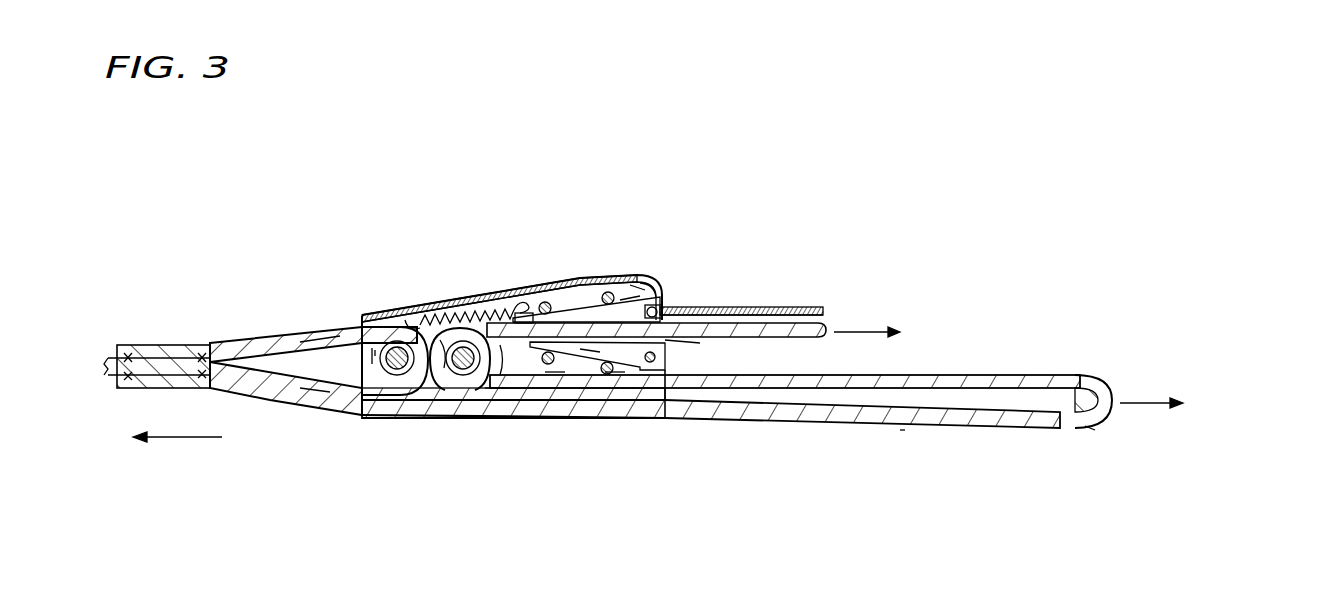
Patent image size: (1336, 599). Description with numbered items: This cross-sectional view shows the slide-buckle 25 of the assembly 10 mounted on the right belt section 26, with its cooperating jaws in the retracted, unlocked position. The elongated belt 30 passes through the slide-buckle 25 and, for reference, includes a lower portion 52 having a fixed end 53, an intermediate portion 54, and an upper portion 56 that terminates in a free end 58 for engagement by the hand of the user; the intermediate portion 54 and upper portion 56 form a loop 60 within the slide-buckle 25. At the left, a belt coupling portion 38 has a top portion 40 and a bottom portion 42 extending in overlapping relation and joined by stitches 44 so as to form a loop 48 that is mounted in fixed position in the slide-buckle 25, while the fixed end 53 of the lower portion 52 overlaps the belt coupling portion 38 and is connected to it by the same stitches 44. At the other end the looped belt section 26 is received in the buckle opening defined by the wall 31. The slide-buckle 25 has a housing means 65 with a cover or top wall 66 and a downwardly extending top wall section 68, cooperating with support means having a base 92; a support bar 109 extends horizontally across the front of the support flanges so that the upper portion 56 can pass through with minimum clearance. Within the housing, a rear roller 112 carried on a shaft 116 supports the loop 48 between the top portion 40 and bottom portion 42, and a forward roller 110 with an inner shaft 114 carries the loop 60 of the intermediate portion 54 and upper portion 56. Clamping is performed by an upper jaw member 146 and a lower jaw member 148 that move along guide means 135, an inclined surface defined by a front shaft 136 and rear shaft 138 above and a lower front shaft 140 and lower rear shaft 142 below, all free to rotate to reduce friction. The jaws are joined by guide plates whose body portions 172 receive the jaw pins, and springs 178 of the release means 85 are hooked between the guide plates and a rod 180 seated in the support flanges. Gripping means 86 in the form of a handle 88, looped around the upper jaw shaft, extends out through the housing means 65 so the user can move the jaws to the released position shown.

The assembly 10 is at (730, 421).
The slide-buckle 25 is at (507, 292).
The right belt section 26 is at (884, 425).
The elongated belt 30 is at (568, 422).
The wall 31 is at (1092, 430).
The belt coupling portion 38 is at (276, 336).
The top portion 40 is at (318, 338).
The bottom portion 42 is at (282, 398).
The stitches 44 is at (200, 352).
The loop 48 is at (400, 378).
The lower portion 52 is at (812, 422).
The fixed end 53 is at (130, 390).
The intermediate portion 54 is at (792, 376).
The upper portion 56 is at (822, 325).
The free end 58 is at (430, 398).
The loop 60 is at (1092, 382).
The housing means 65 is at (423, 305).
The top wall 66 is at (655, 300).
The top wall section 68 is at (576, 282).
The release means 85 is at (480, 310).
The gripping means 86 is at (780, 310).
The handle 88 is at (727, 307).
The base 92 is at (680, 422).
The support bar 109 is at (697, 350).
The forward roller 110 is at (492, 400).
The rear roller 112 is at (282, 380).
The inner shaft 114 is at (472, 378).
The shaft 116 is at (400, 330).
The guide means 135 is at (617, 400).
The front shaft 136 is at (627, 315).
The rear shaft 138 is at (567, 300).
The lower front shaft 140 is at (640, 378).
The lower rear shaft 142 is at (556, 400).
The upper jaw member 146 is at (640, 300).
The lower jaw member 148 is at (584, 365).
The body portion 172 is at (658, 364).
The spring 178 is at (463, 313).
The rod 180 is at (437, 323).